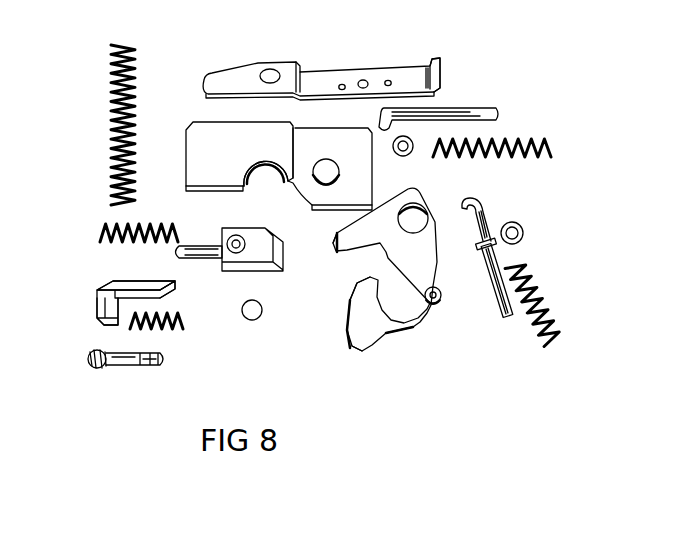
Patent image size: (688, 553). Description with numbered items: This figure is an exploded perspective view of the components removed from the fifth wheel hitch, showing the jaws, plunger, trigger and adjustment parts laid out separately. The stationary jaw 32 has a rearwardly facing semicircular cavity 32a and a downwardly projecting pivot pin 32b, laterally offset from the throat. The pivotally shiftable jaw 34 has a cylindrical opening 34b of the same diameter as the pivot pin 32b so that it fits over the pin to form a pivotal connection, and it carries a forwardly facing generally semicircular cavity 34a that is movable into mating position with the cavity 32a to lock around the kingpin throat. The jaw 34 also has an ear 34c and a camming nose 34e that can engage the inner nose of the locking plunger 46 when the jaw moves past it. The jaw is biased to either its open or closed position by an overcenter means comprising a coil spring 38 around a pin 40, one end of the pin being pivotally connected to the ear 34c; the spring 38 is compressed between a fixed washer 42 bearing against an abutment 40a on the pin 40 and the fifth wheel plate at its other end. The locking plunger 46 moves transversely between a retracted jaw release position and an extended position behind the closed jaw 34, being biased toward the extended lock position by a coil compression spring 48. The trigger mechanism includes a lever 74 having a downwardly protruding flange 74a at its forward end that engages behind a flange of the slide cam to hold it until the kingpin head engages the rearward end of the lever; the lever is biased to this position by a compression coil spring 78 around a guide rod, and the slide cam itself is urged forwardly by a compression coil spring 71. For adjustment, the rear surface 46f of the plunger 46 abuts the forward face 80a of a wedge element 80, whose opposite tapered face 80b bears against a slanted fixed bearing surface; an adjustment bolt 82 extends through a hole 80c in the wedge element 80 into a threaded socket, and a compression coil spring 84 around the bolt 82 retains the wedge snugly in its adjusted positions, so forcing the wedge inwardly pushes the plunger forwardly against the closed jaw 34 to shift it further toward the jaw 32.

The compression coil spring 71 is at (130, 64).
The trigger lever 74 is at (322, 77).
The downwardly protruding flange 74a is at (435, 62).
The wedge element 80 is at (462, 110).
The forward face 80a is at (118, 280).
The opposite tapered face 80b is at (176, 288).
The hole 80c is at (96, 320).
The compression coil spring 78 is at (510, 138).
The stationary jaw 32 is at (232, 156).
The semicircular cavity 32a is at (266, 184).
The pivot pin 32b is at (325, 168).
The pivotally shiftable jaw 34 is at (407, 313).
The semicircular cooperative cavity 34a is at (356, 284).
The cylindrical opening 34b is at (418, 214).
The ear 34c is at (437, 294).
The camming nose 34e is at (340, 241).
The pin 40 is at (506, 320).
The abutment 40a is at (492, 232).
The fixed washer 42 is at (523, 233).
The coil spring 38 is at (546, 298).
The coil compression spring 48 is at (100, 236).
The locking plunger 46 is at (264, 254).
The rear surface 46f is at (253, 273).
The compression coil spring 84 is at (183, 327).
The adjustment bolt 82 is at (128, 366).